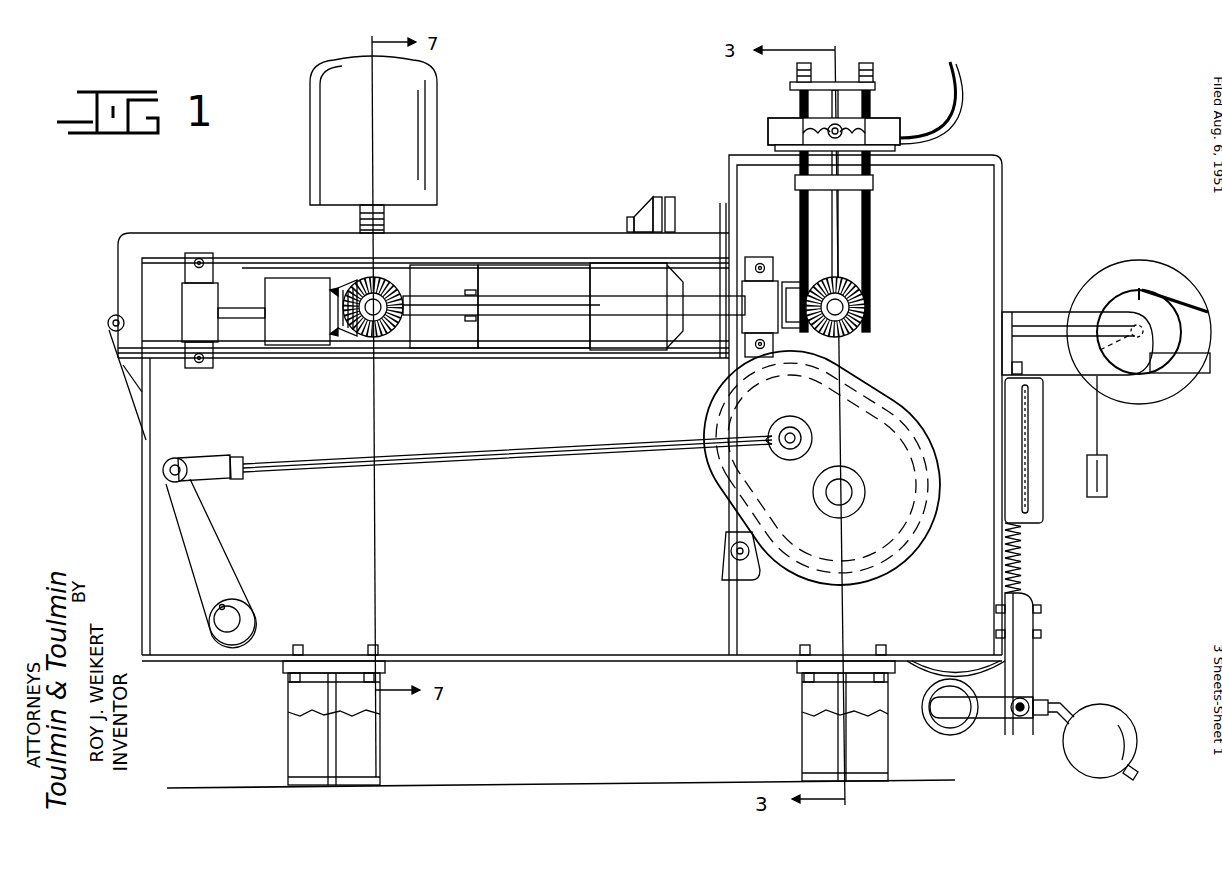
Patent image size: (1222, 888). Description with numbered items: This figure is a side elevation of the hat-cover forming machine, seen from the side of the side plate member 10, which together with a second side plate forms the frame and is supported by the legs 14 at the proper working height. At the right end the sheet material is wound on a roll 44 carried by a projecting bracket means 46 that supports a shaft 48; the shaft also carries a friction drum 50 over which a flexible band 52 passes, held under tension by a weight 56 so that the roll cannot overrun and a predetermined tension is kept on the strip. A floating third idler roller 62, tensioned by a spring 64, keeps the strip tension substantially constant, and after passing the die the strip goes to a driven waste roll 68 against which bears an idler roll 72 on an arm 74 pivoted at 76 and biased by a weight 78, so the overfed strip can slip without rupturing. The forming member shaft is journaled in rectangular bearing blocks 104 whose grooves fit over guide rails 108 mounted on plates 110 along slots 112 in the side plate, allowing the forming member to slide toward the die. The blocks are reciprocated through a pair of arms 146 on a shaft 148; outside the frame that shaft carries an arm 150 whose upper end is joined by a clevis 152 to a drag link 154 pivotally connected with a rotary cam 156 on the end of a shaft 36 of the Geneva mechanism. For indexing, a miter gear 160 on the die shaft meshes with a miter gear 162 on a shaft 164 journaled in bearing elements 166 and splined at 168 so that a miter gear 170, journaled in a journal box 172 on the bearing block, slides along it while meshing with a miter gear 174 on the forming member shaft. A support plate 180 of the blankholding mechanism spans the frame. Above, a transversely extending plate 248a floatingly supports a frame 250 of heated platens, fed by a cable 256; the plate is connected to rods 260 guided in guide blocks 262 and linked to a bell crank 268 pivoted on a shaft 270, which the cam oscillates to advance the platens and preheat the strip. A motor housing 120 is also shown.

The side plate member 10 is at (972, 270).
The legs 14 is at (362, 750).
The shaft 36 is at (840, 494).
The roll 44 is at (1182, 278).
The projecting bracket means 46 is at (1058, 316).
The shaft 48 is at (1105, 342).
The friction drum 50 is at (1139, 281).
The flexible band 52 is at (1198, 314).
The weight 56 is at (1107, 478).
The third idler roller 62 is at (1036, 420).
The spring 64 is at (1016, 566).
The driven waste roll 68 is at (930, 680).
The idler roll 72 is at (950, 722).
The arm 74 is at (1000, 704).
The pivot 76 is at (1016, 718).
The weight 78 is at (1114, 716).
The bearing block 104 is at (248, 282).
The guide rails 108 is at (438, 352).
The plates 110 is at (534, 348).
The slots 112 is at (460, 340).
The motor housing 120 is at (433, 150).
The arms 146 is at (134, 416).
The shaft 148 is at (230, 620).
The arm 150 is at (210, 575).
The clevis 152 is at (218, 459).
The drag link 154 is at (412, 472).
The rotary cam 156 is at (910, 432).
The miter gear 160 is at (868, 318).
The miter gear 162 is at (818, 332).
The shaft 164 is at (638, 302).
The bearing elements 166 is at (202, 305).
The spline 168 is at (538, 300).
The miter gear 170 is at (344, 332).
The journal box 172 is at (300, 338).
The miter gear 174 is at (382, 298).
The support plate 180 is at (660, 197).
The transversely extending plate 248a is at (868, 84).
The frame 250 is at (876, 88).
The cable 256 is at (906, 140).
The rods 260 is at (800, 101).
The guide blocks 262 is at (875, 183).
The bell crank 268 is at (752, 566).
The shaft 270 is at (733, 556).